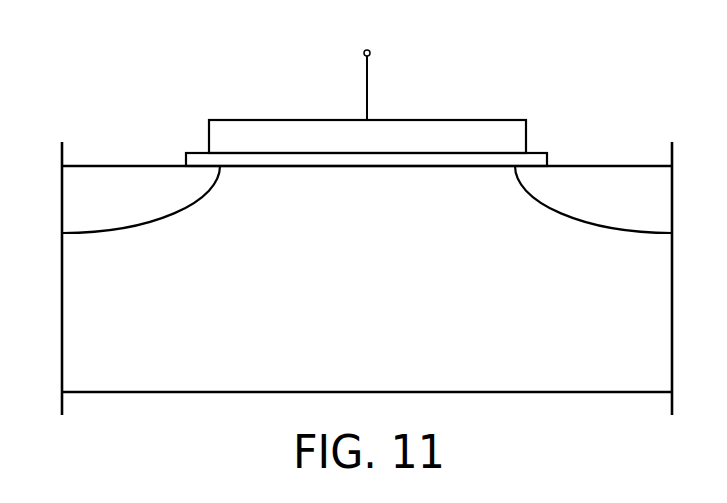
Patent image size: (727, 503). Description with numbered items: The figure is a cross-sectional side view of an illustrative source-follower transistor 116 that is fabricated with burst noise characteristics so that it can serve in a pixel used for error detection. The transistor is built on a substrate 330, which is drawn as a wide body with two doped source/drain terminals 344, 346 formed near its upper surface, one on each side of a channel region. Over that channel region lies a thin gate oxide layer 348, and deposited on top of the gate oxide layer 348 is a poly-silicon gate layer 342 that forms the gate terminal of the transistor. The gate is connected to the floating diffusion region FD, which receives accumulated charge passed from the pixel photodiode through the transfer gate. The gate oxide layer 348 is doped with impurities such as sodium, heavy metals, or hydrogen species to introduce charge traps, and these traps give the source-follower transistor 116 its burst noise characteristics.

The source-follower transistor 116 is at (237, 97).
The substrate 330 is at (513, 367).
The gate layer 342 is at (468, 133).
The source/drain terminal 344 is at (148, 218).
The source/drain terminal 346 is at (597, 220).
The gate oxide layer 348 is at (537, 159).
The floating diffusion region FD is at (367, 71).